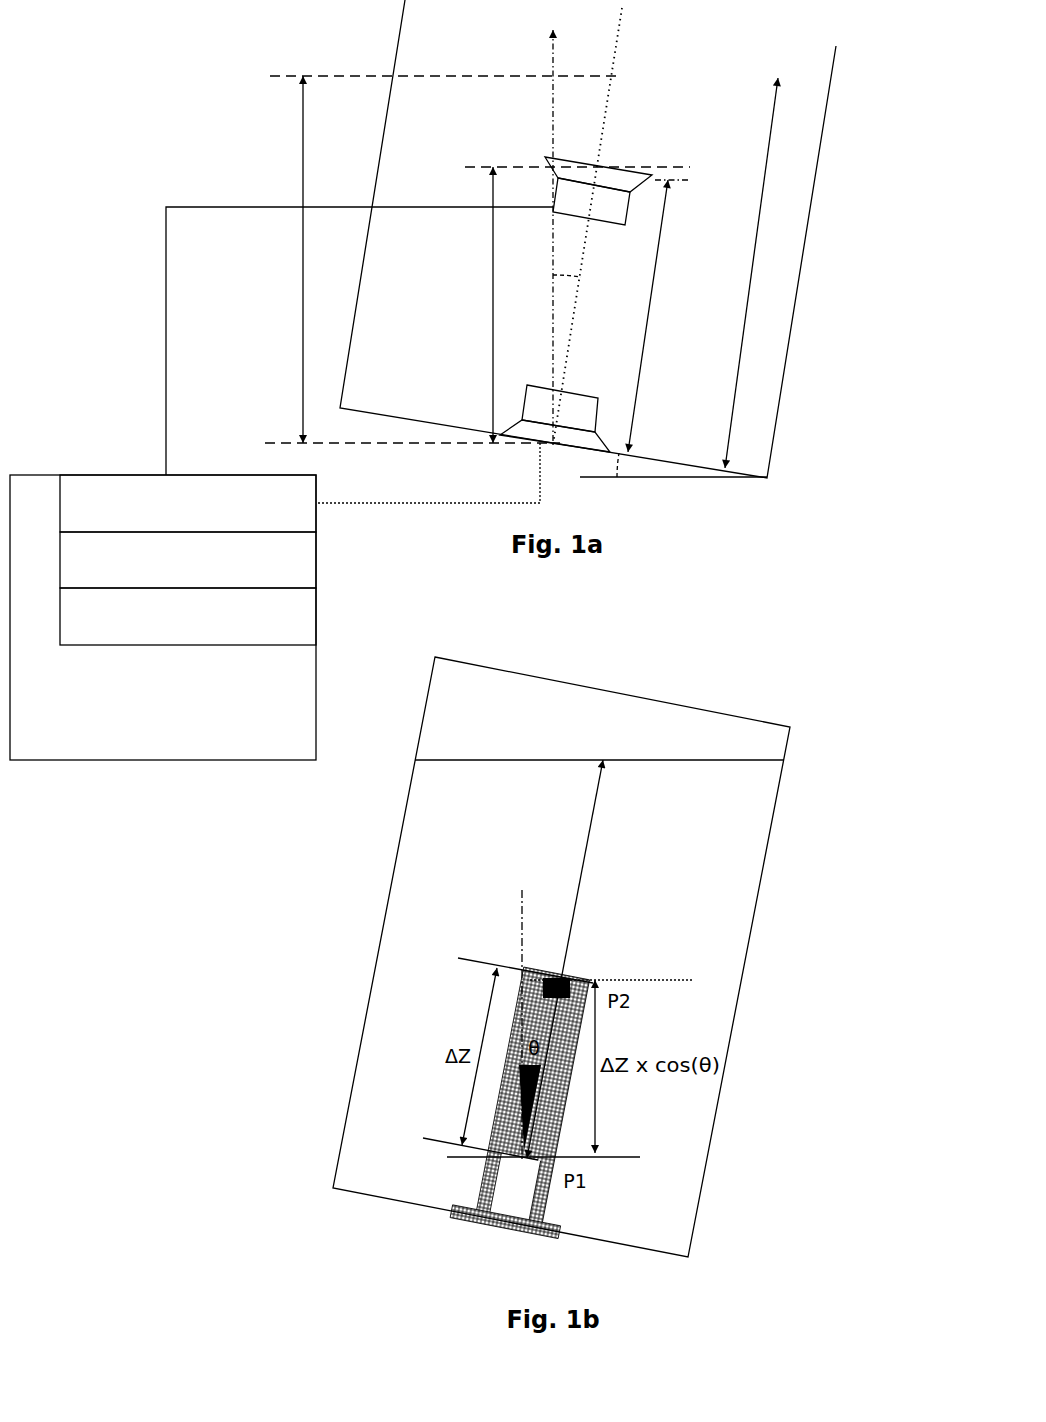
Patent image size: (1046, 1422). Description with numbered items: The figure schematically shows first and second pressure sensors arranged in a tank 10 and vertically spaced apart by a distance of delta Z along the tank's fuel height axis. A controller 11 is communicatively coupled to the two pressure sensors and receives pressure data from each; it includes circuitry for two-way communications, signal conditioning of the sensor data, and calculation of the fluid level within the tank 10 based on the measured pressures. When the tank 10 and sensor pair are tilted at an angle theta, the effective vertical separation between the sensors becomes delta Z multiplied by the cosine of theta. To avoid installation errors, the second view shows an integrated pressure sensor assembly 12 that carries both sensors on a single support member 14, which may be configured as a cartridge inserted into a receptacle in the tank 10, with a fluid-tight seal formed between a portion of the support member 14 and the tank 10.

In FIG. 1a, the tank 10 is at (810, 222).
In FIG. 1a, the controller 11 is at (316, 558).
In FIG. 1b, the integrated pressure sensor assembly 12 is at (430, 1012).
In FIG. 1b, the support member 14 is at (537, 1237).